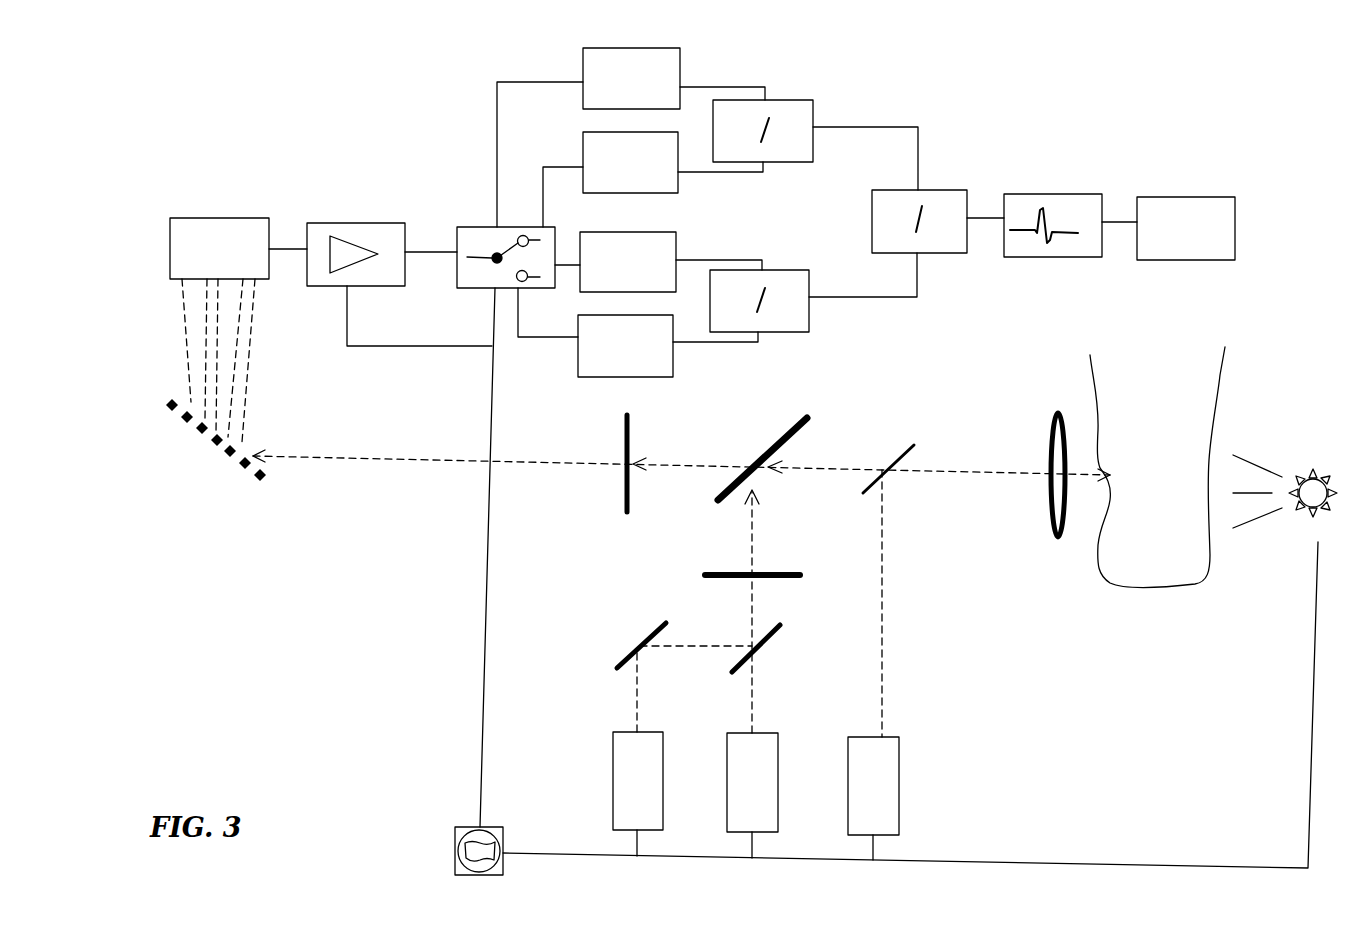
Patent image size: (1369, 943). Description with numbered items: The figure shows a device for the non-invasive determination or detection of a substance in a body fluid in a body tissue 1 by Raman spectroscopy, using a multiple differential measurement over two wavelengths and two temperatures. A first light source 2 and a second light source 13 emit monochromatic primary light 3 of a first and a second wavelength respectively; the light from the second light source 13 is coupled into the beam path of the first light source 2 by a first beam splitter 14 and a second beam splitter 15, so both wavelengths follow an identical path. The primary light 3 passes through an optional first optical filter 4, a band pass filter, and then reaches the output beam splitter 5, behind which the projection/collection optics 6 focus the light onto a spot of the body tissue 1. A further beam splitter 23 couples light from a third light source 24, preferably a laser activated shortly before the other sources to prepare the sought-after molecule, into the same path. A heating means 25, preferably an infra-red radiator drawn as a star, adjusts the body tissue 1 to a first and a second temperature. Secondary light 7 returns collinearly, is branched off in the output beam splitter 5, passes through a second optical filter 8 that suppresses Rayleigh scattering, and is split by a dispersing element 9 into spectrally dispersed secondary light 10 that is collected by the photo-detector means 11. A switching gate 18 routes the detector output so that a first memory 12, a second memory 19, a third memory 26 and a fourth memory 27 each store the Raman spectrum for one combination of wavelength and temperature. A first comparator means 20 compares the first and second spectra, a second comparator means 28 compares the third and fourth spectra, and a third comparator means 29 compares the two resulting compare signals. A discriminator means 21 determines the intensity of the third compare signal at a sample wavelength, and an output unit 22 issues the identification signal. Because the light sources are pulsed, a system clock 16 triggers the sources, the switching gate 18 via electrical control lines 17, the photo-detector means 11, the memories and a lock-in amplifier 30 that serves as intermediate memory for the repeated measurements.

The body tissue 1 is at (1173, 578).
The first light source 2 is at (768, 799).
The primary light 3 is at (755, 543).
The first optical filter 4 is at (720, 570).
The output beam splitter 5 is at (803, 418).
The projection/collection optics 6 is at (1045, 528).
The secondary light 7 is at (452, 458).
The second optical filter 8 is at (623, 497).
The dispersing element 9 is at (212, 453).
The spectrally dispersed secondary light 10 is at (228, 363).
The photo-detector means 11 is at (215, 237).
The first memory 12 is at (662, 363).
The second light source 13 is at (648, 800).
The first beam splitter 14 is at (760, 650).
The second beam splitter 15 is at (652, 647).
The system clock 16 is at (462, 823).
The electrical control lines 17 is at (484, 608).
The switching gate 18 is at (478, 238).
The second memory 19 is at (665, 255).
The first comparator means 20 is at (786, 285).
The discriminator means 21 is at (1065, 258).
The output unit 22 is at (1185, 197).
The beam splitter 23 is at (898, 447).
The third light source 24 is at (890, 815).
The heating means 25 is at (1325, 467).
The third memory 26 is at (665, 80).
The fourth memory 27 is at (663, 185).
The second comparator means 28 is at (787, 110).
The third comparator means 29 is at (957, 190).
The lock-in amplifier 30 is at (383, 240).